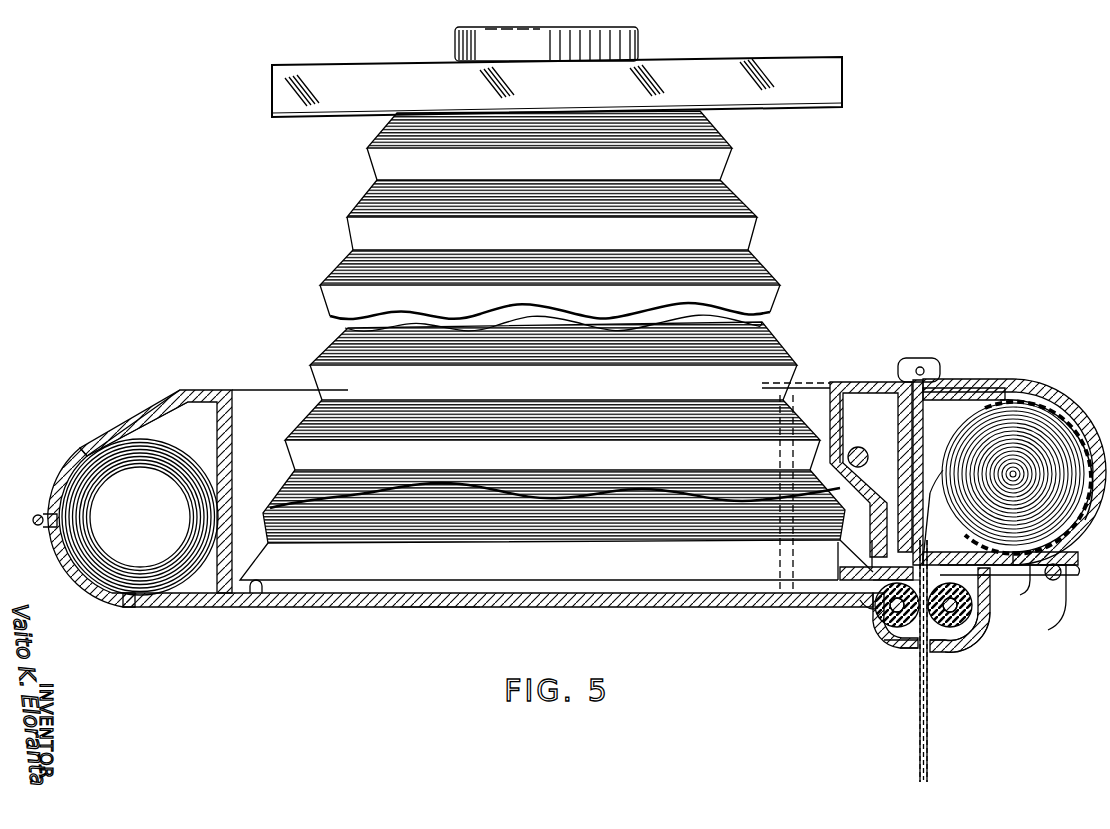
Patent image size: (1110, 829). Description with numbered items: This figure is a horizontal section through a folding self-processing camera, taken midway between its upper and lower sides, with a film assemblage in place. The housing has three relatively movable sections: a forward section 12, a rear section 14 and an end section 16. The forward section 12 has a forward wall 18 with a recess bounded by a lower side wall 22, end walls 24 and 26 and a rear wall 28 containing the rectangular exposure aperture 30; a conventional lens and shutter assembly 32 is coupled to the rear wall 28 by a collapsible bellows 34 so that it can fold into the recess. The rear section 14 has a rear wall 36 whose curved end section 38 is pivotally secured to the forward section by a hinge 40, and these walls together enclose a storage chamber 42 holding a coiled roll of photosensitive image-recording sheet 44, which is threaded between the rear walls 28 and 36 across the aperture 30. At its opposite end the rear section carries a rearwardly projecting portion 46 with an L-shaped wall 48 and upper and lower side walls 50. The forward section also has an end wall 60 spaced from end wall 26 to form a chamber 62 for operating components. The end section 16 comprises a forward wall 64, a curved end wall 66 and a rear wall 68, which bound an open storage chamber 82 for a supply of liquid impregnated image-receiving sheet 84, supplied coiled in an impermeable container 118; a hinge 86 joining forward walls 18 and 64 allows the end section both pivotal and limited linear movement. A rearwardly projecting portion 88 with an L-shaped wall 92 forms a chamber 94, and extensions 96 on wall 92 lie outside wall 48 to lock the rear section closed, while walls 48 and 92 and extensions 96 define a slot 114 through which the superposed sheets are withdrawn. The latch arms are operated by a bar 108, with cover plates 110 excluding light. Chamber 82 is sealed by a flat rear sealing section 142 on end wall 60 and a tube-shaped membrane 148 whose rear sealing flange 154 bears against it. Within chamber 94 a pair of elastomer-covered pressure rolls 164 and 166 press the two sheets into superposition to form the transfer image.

The forward section 12 is at (841, 378).
The rear section 14 is at (693, 598).
The end section 16 is at (1043, 389).
The forward wall 18 is at (189, 392).
The lower side wall 22 is at (308, 390).
The end wall 24 is at (234, 392).
The end wall 26 is at (800, 555).
The rear wall 28 is at (298, 592).
The exposure aperture 30 is at (262, 595).
The lens and shutter assembly 32 is at (282, 119).
The bellows 34 is at (345, 232).
The rear wall 36 is at (437, 600).
The curved end section 38 is at (92, 592).
The hinge 40 is at (38, 514).
The storage chamber 42 is at (176, 432).
The image-recording sheet 44 is at (108, 455).
The rearwardly projecting portion 46 is at (880, 653).
The L-shaped wall 48 is at (893, 628).
The upper and lower side walls 50 is at (880, 623).
The end wall 60 is at (915, 371).
The chamber 62 is at (860, 438).
The forward wall 64 is at (1000, 395).
The curved end wall 66 is at (1062, 573).
The rear wall 68 is at (985, 601).
The storage chamber 82 is at (938, 415).
The image-receiving sheet 84 is at (1096, 450).
The hinge 86 is at (932, 364).
The rearwardly projecting portion 88 is at (956, 667).
The L-shaped wall 92 is at (962, 641).
The chamber 94 is at (1005, 649).
The extensions 96 is at (893, 658).
The bar 108 is at (1040, 620).
The cover plates 110 is at (1066, 595).
The slot 114 is at (933, 666).
The container 118 is at (966, 396).
The rear sealing section 142 is at (880, 558).
The membrane 148 is at (1040, 395).
The rear sealing flange 154 is at (965, 569).
The pressure roll 164 is at (875, 650).
The pressure roll 166 is at (985, 626).